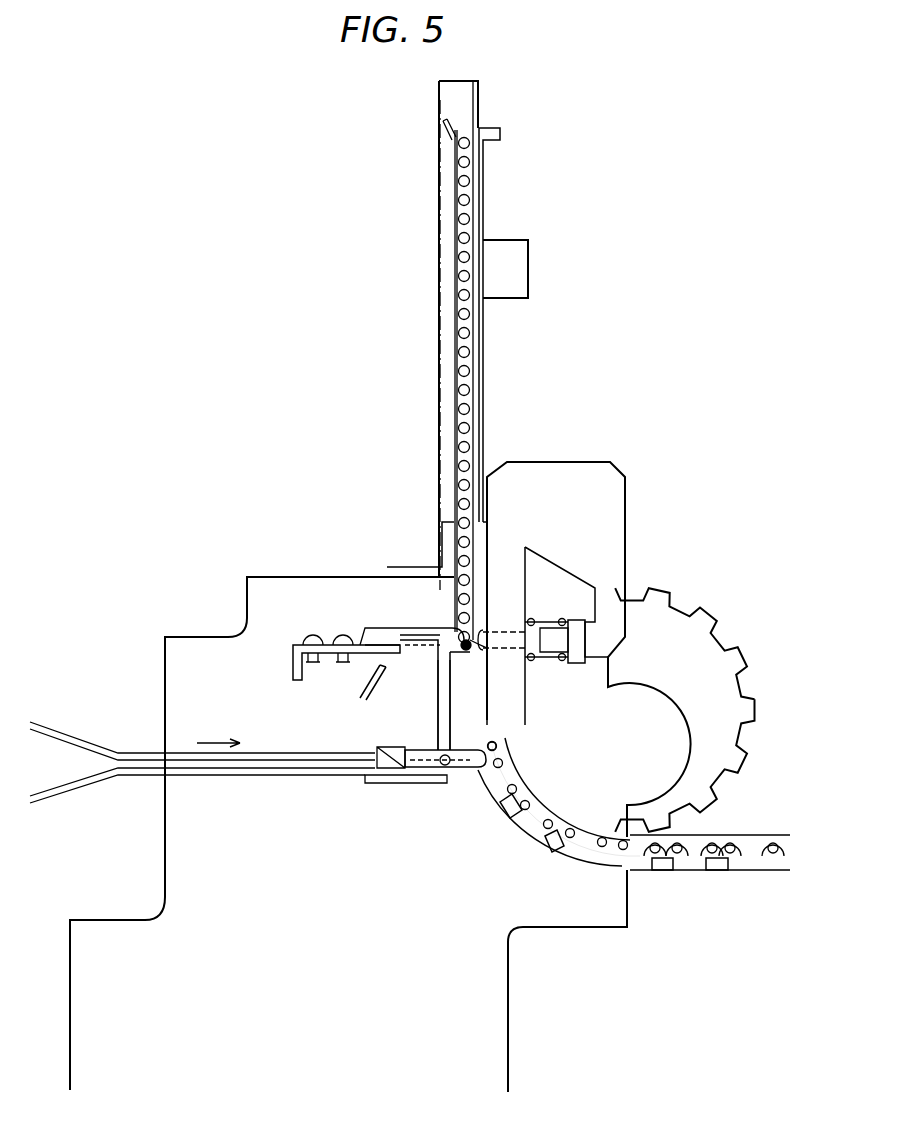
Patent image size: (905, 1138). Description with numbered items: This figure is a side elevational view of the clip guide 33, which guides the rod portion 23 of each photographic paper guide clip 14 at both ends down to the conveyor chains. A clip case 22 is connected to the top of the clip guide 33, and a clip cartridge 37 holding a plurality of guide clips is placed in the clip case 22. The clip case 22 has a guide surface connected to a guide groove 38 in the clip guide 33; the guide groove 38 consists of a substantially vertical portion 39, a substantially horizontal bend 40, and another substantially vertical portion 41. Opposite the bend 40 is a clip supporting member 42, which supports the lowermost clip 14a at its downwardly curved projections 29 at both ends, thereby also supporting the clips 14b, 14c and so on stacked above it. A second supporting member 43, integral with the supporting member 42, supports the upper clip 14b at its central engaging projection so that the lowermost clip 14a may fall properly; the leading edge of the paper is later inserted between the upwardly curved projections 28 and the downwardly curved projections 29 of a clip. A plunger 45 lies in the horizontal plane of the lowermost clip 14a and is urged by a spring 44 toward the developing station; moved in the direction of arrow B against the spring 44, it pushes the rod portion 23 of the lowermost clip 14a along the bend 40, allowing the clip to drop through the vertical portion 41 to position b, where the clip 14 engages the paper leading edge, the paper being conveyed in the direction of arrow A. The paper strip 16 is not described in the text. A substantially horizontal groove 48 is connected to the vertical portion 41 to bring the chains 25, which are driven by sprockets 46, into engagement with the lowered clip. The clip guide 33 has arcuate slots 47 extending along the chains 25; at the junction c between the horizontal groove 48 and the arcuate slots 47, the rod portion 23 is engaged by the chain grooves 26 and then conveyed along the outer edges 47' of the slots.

The clip cartridge 37 is at (440, 96).
The rod portion 23 is at (470, 144).
The clip case 22 is at (483, 190).
The clip guide 33 is at (346, 539).
The substantially vertical portion 39 is at (452, 600).
The guide groove 38 is at (484, 630).
The clip 14c is at (470, 625).
The upper clip 14b is at (487, 600).
The lowermost clip 14a is at (472, 648).
The photographic paper guide clip 14 is at (437, 614).
The plunger 45 is at (555, 640).
The spring 44 is at (552, 660).
The substantially horizontal bend 40 is at (466, 652).
The substantially vertical portion 41 is at (438, 712).
The clip supporting member 42 is at (375, 660).
The second supporting member 43 is at (365, 628).
The upwardly curved projections 28 is at (402, 632).
The downwardly curved projections 29 is at (418, 652).
The substantially horizontal groove 48 is at (448, 768).
The film strip 16 is at (115, 750).
The sprockets 46 is at (740, 712).
The arcuate slots 47 is at (559, 802).
The outer edges 47' is at (526, 833).
The chains 25 is at (775, 862).
The groove 26 is at (717, 872).
The conveyance direction A is at (228, 745).
The plunger movement direction B is at (502, 644).
The position b is at (375, 755).
The junction c is at (485, 770).